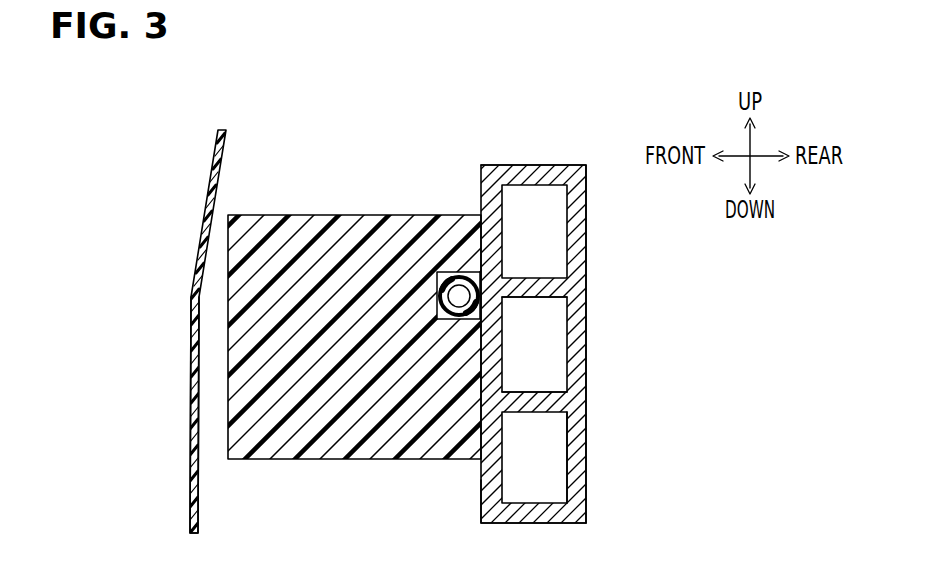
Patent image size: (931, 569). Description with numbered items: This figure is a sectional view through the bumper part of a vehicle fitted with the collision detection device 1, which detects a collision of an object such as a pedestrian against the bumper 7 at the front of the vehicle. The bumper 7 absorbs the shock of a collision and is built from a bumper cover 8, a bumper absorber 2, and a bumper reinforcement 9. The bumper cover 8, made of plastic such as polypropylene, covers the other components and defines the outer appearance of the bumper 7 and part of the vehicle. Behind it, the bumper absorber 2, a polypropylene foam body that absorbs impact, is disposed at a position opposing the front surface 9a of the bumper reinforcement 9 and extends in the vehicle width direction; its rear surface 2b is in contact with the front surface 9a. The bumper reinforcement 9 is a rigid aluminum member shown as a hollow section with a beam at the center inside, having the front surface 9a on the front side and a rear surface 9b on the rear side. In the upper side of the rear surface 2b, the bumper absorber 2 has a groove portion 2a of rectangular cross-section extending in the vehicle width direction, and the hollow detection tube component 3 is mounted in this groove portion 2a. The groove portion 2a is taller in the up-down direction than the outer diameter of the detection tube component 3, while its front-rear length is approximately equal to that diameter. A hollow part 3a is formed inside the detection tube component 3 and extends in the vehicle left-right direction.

The collision detection device 1 is at (563, 135).
The bumper absorber 2 is at (347, 215).
The groove portion 2a is at (496, 303).
The rear surface 2b is at (492, 393).
The detection tube component 3 is at (459, 284).
The hollow part 3a is at (438, 293).
The bumper 7 is at (200, 237).
The bumper cover 8 is at (190, 391).
The bumper reinforcement 9 is at (587, 271).
The front surface 9a is at (481, 492).
The rear surface 9b is at (587, 441).